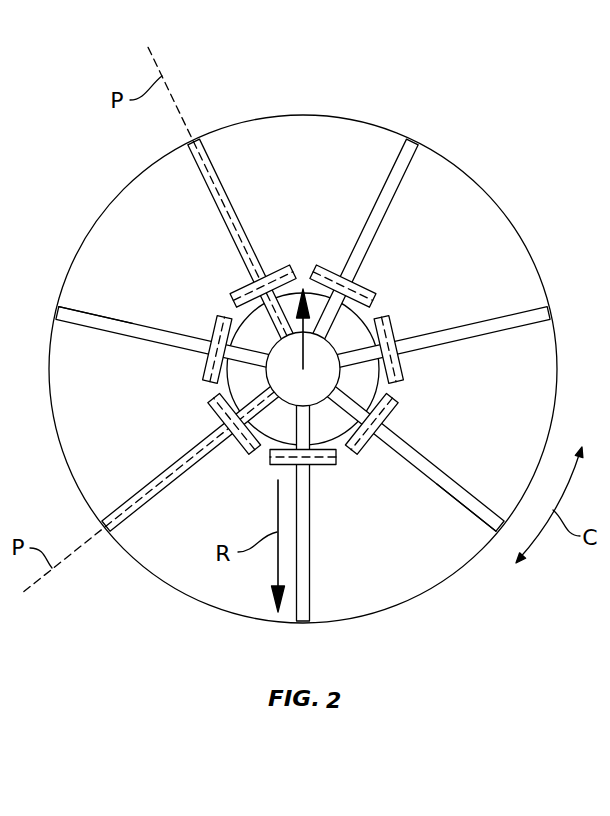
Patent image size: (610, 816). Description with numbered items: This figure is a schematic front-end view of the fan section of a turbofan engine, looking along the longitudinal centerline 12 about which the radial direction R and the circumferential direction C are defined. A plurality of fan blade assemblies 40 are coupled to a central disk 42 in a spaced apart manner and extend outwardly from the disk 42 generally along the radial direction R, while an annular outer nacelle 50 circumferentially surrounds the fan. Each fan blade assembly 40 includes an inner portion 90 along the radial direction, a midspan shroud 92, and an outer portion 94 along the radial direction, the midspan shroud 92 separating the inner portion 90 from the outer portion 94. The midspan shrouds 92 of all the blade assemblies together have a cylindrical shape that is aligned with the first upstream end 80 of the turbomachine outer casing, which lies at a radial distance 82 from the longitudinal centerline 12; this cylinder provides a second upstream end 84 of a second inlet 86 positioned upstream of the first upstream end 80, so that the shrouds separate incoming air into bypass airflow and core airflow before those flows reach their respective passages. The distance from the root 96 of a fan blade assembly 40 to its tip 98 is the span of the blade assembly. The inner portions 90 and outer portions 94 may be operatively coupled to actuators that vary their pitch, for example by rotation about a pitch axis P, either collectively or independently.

The longitudinal centerline 12 is at (303, 369).
The fan blade assembly 40 is at (229, 168).
The disk 42 is at (260, 450).
The outer nacelle 50 is at (137, 565).
The first upstream end 80 is at (368, 318).
The radial distance 82 is at (282, 265).
The second upstream end 84 is at (400, 325).
The second inlet 86 is at (245, 383).
The inner portion 90 is at (231, 310).
The midspan shroud 92 is at (203, 388).
The outer portion 94 is at (124, 332).
The root 96 is at (330, 322).
The tip 98 is at (413, 135).